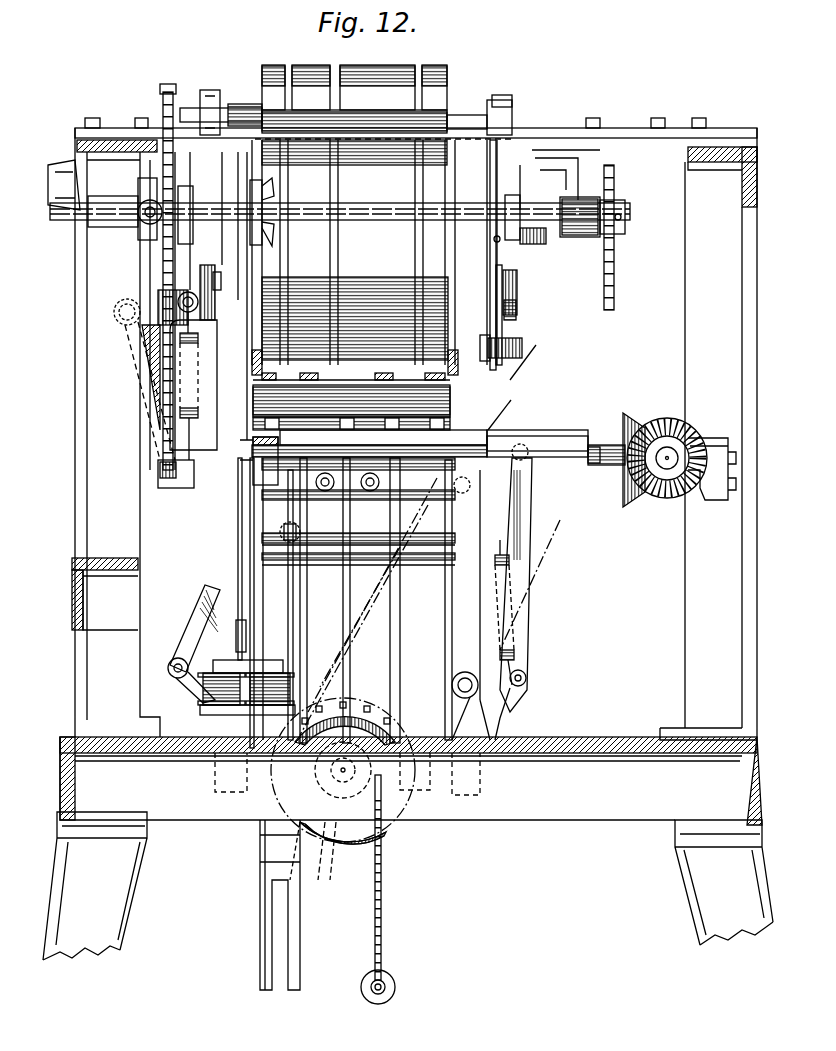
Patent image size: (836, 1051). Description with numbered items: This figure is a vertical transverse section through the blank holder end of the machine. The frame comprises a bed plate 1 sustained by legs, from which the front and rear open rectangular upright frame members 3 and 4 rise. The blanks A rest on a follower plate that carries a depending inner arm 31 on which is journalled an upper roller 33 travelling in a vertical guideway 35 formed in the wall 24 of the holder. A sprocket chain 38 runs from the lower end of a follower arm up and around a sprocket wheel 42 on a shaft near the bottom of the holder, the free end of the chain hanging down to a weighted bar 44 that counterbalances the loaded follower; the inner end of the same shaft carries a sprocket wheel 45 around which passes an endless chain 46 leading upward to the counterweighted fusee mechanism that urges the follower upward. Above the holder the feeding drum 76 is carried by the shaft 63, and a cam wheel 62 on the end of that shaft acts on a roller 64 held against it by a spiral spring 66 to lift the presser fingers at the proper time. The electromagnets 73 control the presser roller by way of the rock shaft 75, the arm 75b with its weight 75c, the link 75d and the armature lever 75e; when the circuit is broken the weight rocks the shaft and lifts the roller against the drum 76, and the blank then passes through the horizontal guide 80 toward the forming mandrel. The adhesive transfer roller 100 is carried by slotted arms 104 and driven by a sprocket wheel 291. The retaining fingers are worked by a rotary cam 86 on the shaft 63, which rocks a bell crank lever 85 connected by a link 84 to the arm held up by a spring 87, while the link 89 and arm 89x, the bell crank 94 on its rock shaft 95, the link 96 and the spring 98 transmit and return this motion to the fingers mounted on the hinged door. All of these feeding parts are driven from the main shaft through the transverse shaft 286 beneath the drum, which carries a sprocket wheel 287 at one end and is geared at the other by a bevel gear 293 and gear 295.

The bed plate 1 is at (408, 848).
The front upright frame member 3 is at (132, 536).
The rear upright frame member 4 is at (708, 434).
The vertical rods 24 is at (376, 514).
The inner depending arm 31 is at (292, 600).
The upper roller 33 is at (294, 530).
The vertical guideway 35 is at (295, 618).
The sprocket chain 38 is at (382, 894).
The sprocket wheel 42 is at (332, 802).
The weighted bar 44 is at (382, 980).
The sprocket wheel 45 is at (358, 708).
The endless sprocket chain 46 is at (372, 602).
The cam wheel 62 is at (513, 290).
The shaft 63 is at (544, 244).
The roller 64 is at (512, 350).
The spiral spring 66 is at (513, 308).
The electromagnets 73 is at (282, 690).
The rock shaft 75 is at (333, 407).
The arm 75b is at (270, 438).
The weight 75c is at (290, 454).
The link 75d is at (236, 560).
The armature lever 75e is at (244, 634).
The feeding drum 76 is at (373, 118).
The horizontal guide 80 is at (306, 382).
The link 84 is at (142, 408).
The bell crank lever 85 is at (140, 302).
The rotary cam 86 is at (216, 282).
The spring 87 is at (196, 368).
The link 89 is at (206, 598).
The arm 89x is at (185, 684).
The bell crank 94 is at (494, 722).
The rock shaft 95 is at (465, 672).
The link 96 is at (526, 522).
The spring 98 is at (496, 575).
The transfer roller 100 is at (438, 84).
The arms 104 is at (214, 102).
The transverse shaft 286 is at (556, 460).
The sprocket wheel 287 is at (160, 470).
The sprocket wheel 291 is at (172, 96).
The bevel gear 293 is at (632, 494).
The gear 295 is at (672, 450).
The blanks A is at (426, 494).